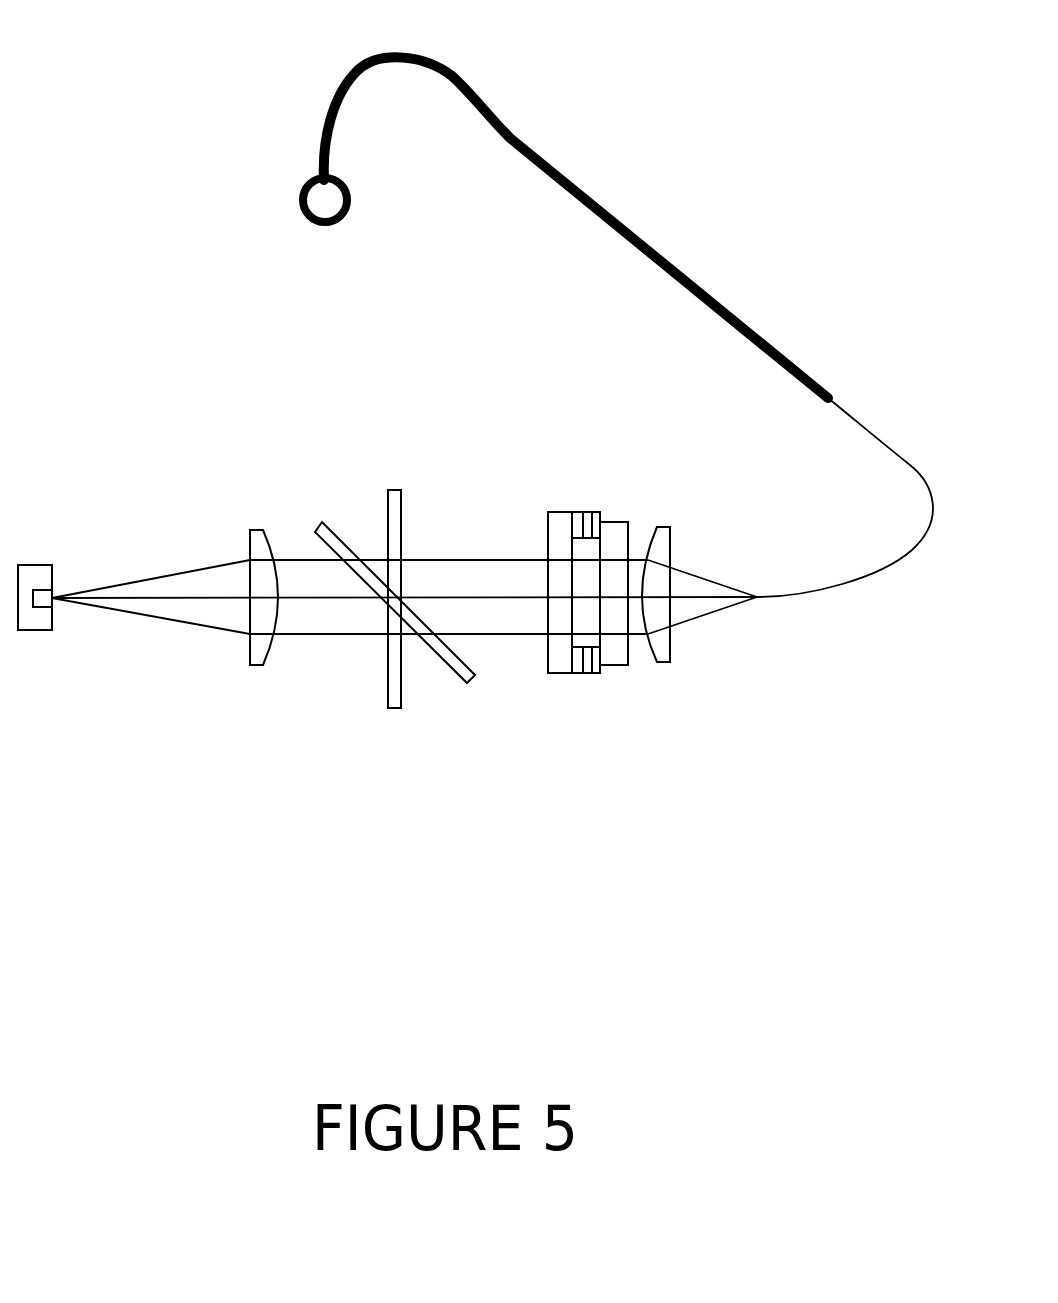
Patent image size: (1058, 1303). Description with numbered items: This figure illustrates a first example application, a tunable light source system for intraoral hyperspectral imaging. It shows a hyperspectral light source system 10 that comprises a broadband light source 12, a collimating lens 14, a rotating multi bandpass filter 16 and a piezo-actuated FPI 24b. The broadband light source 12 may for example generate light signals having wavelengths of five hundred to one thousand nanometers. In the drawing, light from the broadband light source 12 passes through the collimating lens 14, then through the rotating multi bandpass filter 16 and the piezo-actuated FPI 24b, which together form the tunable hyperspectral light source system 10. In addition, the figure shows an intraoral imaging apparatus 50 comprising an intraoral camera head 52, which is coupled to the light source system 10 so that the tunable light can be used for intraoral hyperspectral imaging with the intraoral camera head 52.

The hyperspectral light source system 10 is at (186, 484).
The broadband light source 12 is at (35, 632).
The collimating lens 14 is at (258, 667).
The rotating multi bandpass filter 16 is at (395, 709).
The piezo-actuated FPI 24b is at (563, 675).
The intraoral imaging apparatus 50 is at (648, 241).
The intraoral camera head 52 is at (295, 193).